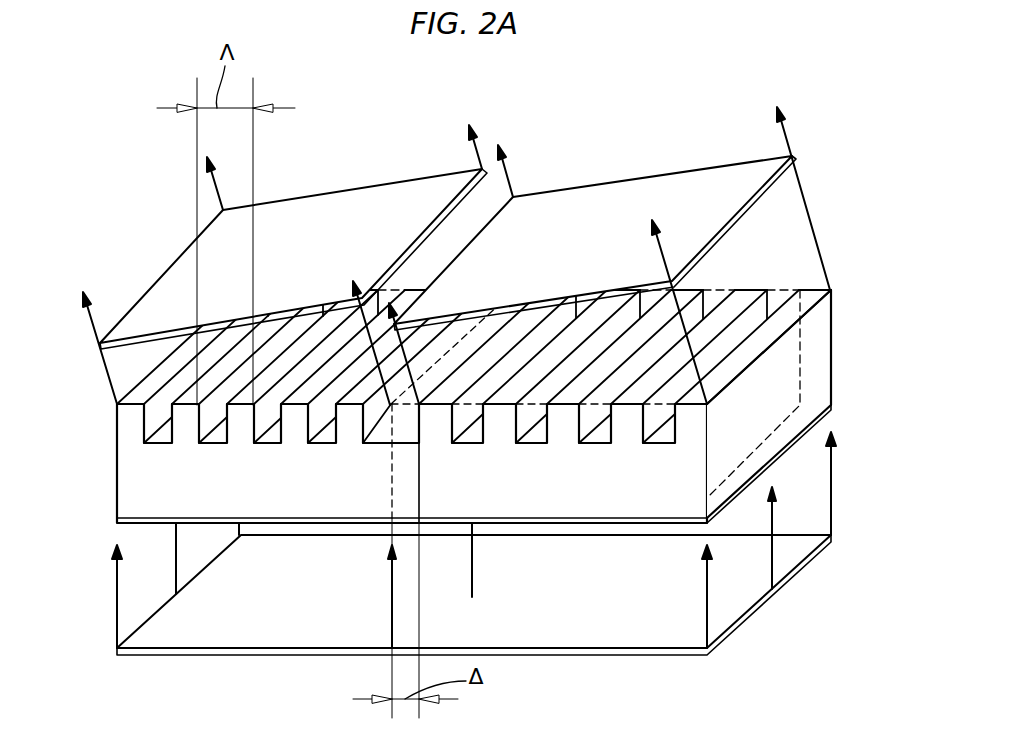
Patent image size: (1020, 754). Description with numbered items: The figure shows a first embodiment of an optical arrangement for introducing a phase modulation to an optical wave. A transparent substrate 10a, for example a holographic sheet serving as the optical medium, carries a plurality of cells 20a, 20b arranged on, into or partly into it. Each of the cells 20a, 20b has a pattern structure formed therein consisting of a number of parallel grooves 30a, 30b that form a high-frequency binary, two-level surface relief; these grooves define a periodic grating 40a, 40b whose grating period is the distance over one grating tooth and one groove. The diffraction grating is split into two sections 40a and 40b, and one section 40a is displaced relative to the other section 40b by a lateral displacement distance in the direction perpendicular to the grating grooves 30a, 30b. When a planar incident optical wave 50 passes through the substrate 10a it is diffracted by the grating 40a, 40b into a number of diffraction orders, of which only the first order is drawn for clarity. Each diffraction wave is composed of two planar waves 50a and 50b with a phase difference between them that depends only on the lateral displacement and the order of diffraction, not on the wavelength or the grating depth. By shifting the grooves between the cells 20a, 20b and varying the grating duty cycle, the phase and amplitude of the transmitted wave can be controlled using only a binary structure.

The substrate 10a is at (790, 398).
The cell 20a is at (781, 172).
The cell 20b is at (427, 270).
The grating grooves 30a is at (725, 272).
The grating grooves 30b is at (150, 418).
The grating section 40a is at (707, 273).
The grating section 40b is at (133, 398).
The incident optical wave 50 is at (738, 596).
The planar wave 50a is at (598, 203).
The planar wave 50b is at (333, 207).